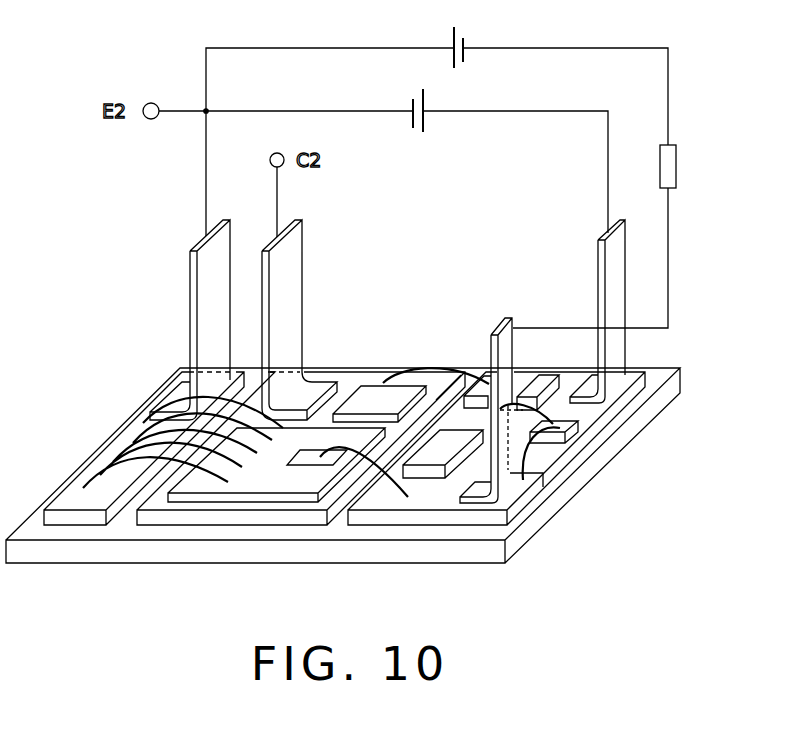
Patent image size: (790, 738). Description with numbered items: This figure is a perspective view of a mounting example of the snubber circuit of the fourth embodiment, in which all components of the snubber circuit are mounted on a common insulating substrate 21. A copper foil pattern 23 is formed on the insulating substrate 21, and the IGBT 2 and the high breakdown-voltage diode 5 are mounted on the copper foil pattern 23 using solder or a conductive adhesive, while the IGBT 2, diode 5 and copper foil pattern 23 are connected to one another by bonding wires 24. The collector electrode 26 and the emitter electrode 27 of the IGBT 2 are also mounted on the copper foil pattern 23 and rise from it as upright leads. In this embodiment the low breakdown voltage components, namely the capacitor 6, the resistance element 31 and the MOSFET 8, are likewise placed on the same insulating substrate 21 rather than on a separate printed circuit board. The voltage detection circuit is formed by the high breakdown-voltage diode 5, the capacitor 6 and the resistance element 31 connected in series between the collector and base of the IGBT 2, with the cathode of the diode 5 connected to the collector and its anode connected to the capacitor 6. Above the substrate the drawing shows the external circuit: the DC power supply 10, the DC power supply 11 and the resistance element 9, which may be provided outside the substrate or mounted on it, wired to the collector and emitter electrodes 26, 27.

The IGBT 2 is at (258, 483).
The high breakdown-voltage diode 5 is at (369, 392).
The capacitor 6 is at (523, 380).
The MOSFET 8 is at (560, 424).
The resistance element 9 is at (677, 162).
The DC power supply 10 is at (458, 64).
The DC power supply 11 is at (413, 133).
The insulating substrate 21 is at (80, 552).
The copper foil pattern 23 is at (530, 493).
The bonding wires 24 is at (107, 473).
The collector electrode 26 is at (290, 250).
The emitter electrode 27 is at (192, 275).
The resistance element 31 is at (432, 457).